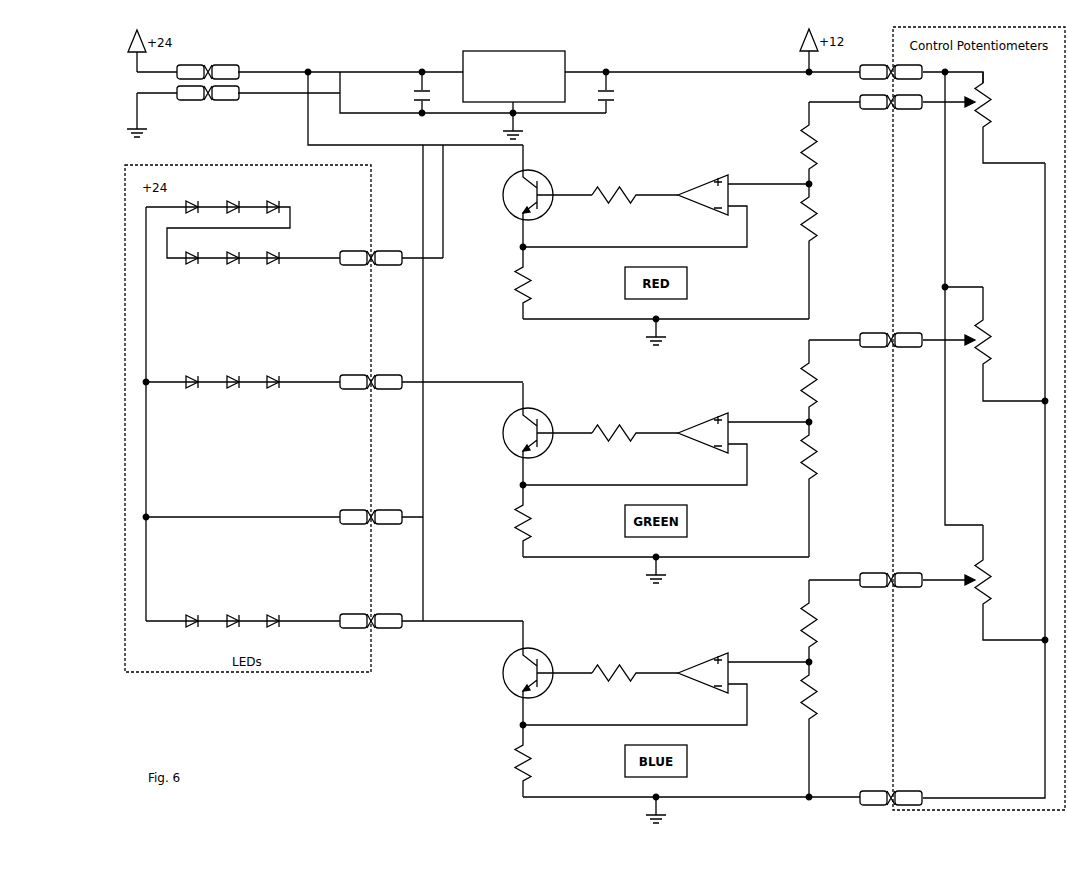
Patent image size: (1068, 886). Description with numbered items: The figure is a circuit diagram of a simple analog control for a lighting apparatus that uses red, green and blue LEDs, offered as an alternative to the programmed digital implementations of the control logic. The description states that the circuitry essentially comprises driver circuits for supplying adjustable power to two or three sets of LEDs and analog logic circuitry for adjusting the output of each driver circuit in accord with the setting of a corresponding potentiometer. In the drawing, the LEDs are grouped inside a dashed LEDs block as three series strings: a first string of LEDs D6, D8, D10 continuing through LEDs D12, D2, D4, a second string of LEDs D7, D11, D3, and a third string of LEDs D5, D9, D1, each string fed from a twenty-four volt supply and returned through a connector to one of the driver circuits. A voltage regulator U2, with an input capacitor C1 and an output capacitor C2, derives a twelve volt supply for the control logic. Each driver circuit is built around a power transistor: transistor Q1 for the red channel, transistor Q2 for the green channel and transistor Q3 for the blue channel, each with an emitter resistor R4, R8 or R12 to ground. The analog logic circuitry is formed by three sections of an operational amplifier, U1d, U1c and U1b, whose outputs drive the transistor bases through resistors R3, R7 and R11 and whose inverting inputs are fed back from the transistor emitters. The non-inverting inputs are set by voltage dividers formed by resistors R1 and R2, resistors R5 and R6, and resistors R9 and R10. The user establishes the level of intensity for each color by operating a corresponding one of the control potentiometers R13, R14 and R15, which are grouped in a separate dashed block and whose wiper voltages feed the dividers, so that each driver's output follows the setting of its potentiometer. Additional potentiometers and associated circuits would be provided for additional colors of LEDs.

The input filter capacitor 0.1 uF C1 is at (401, 92).
The output filter capacitor 0.1 uF C2 is at (627, 93).
The 7812 voltage regulator U2 is at (514, 95).
The op-amp 324D red channel U1d is at (666, 209).
The op-amp 324D green channel U1c is at (666, 447).
The op-amp 324D blue channel U1b is at (666, 687).
The TIP 3055 transistor red channel Q1 is at (519, 196).
The TIP 3055 transistor green channel Q2 is at (519, 434).
The TIP 3055 transistor blue channel Q3 is at (519, 673).
The resistor 20 kohm R1 is at (831, 143).
The resistor 10 kohm R2 is at (831, 251).
The resistor 5.6 kohm R3 is at (635, 180).
The resistor 13 ohm R4 is at (541, 283).
The resistor 47 kohm R5 is at (831, 381).
The resistor 3.3 kohm R6 is at (833, 489).
The resistor 3.3 kohm R7 is at (635, 418).
The resistor 1.3 ohm R8 is at (543, 521).
The resistor 47 kohm R9 is at (831, 621).
The resistor 3.3 kohm R10 is at (833, 729).
The resistor 3.3 kohm R11 is at (635, 658).
The resistor 1.3 ohm R12 is at (543, 761).
The control potentiometer 10 kohm red R13 is at (1010, 117).
The control potentiometer 10 kohm green R14 is at (1010, 344).
The control potentiometer 10 kohm blue R15 is at (1010, 582).
The LED D1 is at (273, 612).
The LED D2 is at (233, 249).
The LED D3 is at (273, 373).
The LED D4 is at (273, 249).
The LED D5 is at (192, 612).
The LED D6 is at (192, 198).
The LED D7 is at (192, 373).
The LED D8 is at (233, 198).
The LED D9 is at (233, 612).
The LED D10 is at (274, 198).
The LED D11 is at (234, 373).
The LED D12 is at (193, 249).